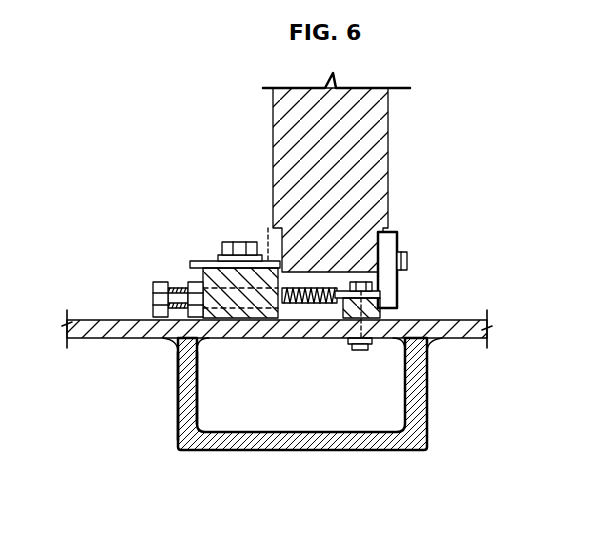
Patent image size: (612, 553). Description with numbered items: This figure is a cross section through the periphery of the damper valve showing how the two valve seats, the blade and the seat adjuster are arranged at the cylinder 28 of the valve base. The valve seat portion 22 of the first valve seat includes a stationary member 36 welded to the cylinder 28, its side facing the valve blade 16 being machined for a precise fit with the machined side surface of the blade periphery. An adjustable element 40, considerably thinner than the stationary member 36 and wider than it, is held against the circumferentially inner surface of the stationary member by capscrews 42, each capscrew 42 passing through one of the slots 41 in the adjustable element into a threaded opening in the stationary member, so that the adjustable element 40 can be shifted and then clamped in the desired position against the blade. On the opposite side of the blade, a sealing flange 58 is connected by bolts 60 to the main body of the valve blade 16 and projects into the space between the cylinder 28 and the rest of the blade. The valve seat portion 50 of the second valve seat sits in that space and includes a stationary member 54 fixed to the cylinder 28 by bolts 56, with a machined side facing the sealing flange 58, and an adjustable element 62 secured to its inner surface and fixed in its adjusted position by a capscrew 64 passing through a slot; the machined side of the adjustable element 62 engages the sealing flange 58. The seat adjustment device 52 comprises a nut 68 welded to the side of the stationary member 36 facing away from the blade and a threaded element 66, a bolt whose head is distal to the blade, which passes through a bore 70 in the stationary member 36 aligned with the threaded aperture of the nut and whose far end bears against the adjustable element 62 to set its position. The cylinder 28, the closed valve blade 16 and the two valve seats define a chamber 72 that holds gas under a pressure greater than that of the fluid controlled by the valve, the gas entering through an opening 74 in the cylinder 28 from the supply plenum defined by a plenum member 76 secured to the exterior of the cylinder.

The valve blade 16 is at (380, 165).
The valve seat portion 22 is at (231, 201).
The cylinder 28 is at (455, 340).
The stationary member 36 is at (177, 362).
The adjustable element 40 is at (206, 262).
The slots 41 is at (265, 236).
The capscrews 42 is at (239, 247).
The valve seat portion 50 is at (344, 297).
The seat adjustment device 52 is at (141, 245).
The stationary member 54 is at (350, 298).
The bolts 56 is at (359, 351).
The sealing flange 58 is at (398, 290).
The bolts 60 is at (408, 253).
The adjustable element 62 is at (377, 299).
The capscrew 64 is at (420, 348).
The threaded element 66 is at (153, 286).
The nut 68 is at (188, 284).
The bore 70 is at (225, 343).
The chamber 72 is at (314, 306).
The opening 74 is at (292, 340).
The plenum member 76 is at (428, 406).